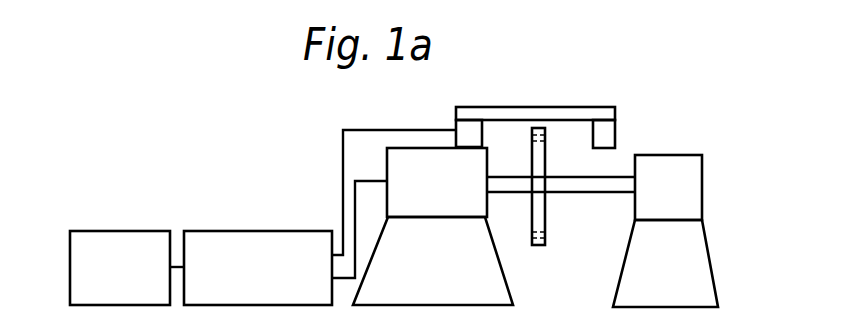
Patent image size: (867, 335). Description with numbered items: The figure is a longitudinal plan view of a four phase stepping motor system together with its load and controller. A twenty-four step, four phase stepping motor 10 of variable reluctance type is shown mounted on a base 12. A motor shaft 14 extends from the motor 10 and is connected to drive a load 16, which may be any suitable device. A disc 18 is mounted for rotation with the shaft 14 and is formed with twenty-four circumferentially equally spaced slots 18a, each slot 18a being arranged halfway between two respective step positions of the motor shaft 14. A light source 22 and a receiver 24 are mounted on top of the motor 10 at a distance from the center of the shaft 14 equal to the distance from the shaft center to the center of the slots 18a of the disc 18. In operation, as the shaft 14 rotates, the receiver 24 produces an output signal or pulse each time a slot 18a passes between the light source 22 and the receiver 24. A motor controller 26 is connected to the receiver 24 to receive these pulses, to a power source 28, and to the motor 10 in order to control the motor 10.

The stepping motor 10 is at (443, 200).
The base 12 is at (445, 280).
The motor shaft 14 is at (598, 193).
The load 16 is at (680, 160).
The disc 18 is at (546, 213).
The slots 18a is at (541, 130).
The light source 22 is at (613, 135).
The receiver 24 is at (477, 136).
The motor controller 26 is at (262, 231).
The power source 28 is at (126, 231).